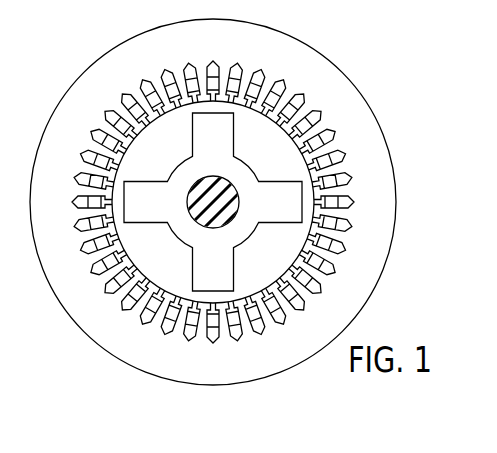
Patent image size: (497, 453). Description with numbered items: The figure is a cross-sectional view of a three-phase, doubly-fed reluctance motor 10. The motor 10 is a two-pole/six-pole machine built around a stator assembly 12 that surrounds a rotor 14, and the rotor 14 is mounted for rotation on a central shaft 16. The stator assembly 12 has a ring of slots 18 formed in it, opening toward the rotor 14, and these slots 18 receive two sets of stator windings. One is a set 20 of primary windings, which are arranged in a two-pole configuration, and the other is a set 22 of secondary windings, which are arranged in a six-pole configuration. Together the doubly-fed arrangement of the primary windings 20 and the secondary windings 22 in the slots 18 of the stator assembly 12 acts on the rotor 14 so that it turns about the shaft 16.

The doubly-fed reluctance motor 10 is at (380, 105).
The stator assembly 12 is at (86, 340).
The rotor 14 is at (182, 273).
The shaft 16 is at (186, 188).
The slots 18 is at (148, 114).
The set of primary windings 20 is at (60, 226).
The set of secondary windings 22 is at (68, 250).